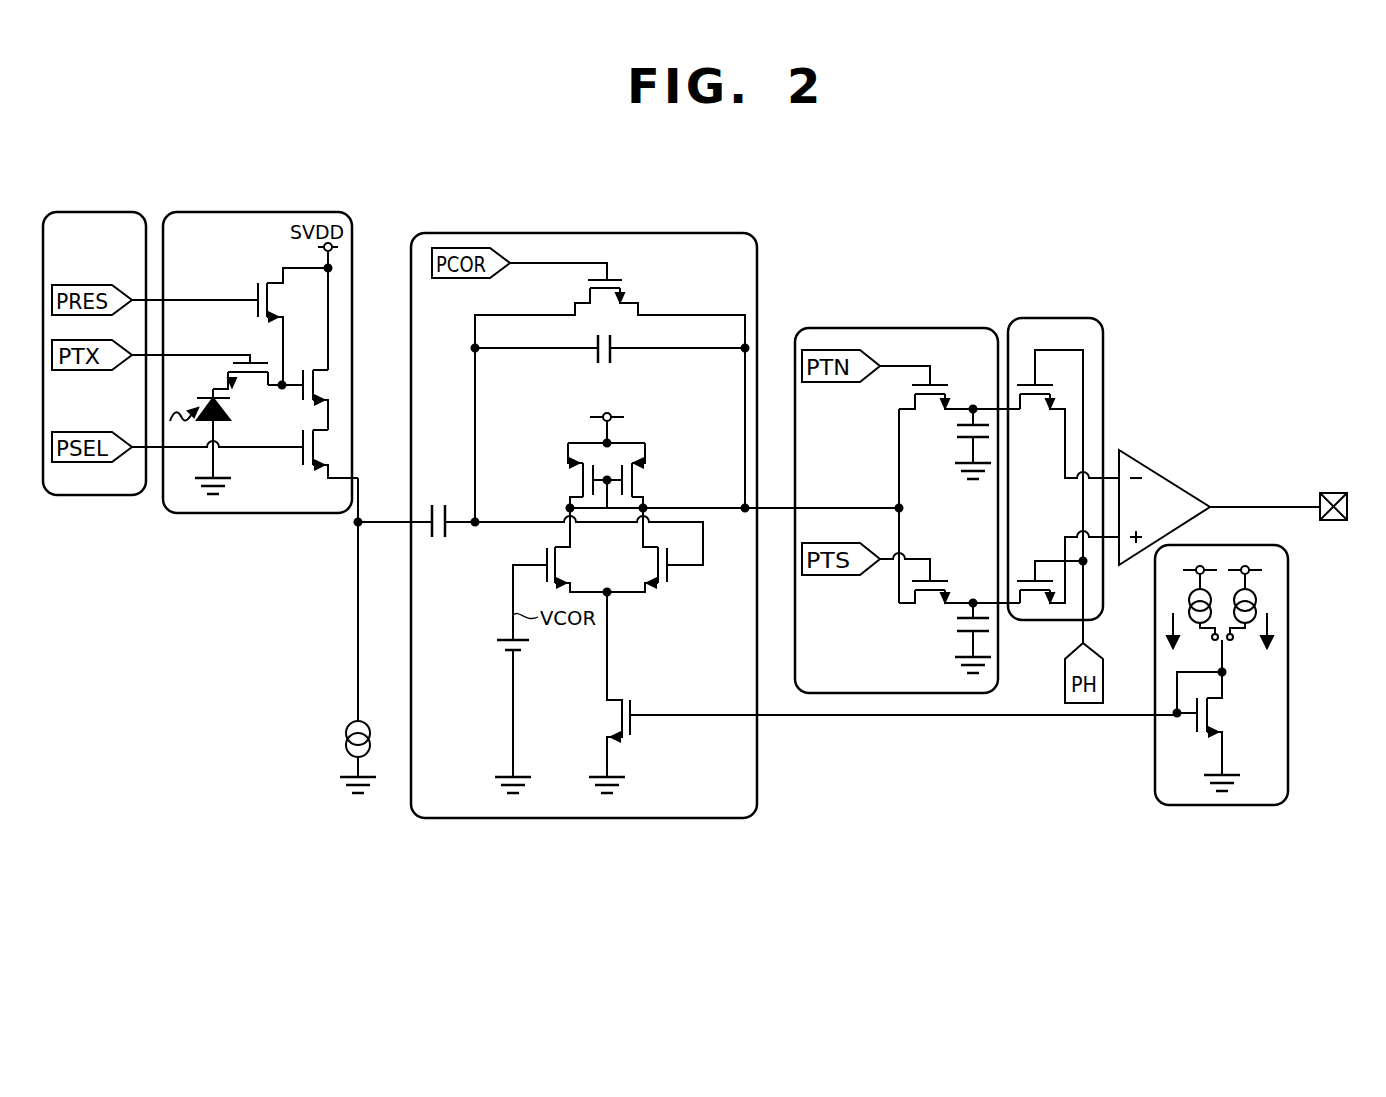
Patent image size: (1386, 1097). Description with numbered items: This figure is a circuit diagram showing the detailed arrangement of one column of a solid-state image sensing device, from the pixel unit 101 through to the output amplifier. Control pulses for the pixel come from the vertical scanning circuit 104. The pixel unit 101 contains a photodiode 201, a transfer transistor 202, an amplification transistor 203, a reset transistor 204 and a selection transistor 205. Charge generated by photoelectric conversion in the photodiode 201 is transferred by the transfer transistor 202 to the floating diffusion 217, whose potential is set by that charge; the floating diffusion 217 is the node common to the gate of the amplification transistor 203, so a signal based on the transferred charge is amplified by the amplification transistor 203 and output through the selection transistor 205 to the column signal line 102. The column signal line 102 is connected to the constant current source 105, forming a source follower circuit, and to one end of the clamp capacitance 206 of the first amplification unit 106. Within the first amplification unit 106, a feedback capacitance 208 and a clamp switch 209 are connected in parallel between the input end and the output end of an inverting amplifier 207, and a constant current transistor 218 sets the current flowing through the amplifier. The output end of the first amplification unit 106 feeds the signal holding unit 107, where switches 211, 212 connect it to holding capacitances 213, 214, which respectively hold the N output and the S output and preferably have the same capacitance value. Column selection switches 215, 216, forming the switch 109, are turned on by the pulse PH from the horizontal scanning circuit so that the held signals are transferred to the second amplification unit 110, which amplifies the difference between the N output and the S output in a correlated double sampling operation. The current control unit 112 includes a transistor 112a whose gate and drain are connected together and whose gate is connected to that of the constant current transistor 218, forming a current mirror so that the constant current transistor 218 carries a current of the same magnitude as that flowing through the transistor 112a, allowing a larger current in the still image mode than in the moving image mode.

The pixel unit 101 is at (254, 212).
The column signal line 102 is at (357, 640).
The vertical scanning circuit 104 is at (95, 497).
The constant current source 105 is at (345, 739).
The first amplification unit 106 is at (612, 233).
The signal holding unit 107 is at (880, 327).
The switch 109 is at (1060, 317).
The second amplification unit 110 is at (1162, 470).
The current control unit 112 is at (1290, 603).
The transistor 112a is at (1222, 712).
The photodiode 201 is at (222, 418).
The transfer transistor 202 is at (258, 358).
The amplification transistor 203 is at (325, 382).
The reset transistor 204 is at (256, 280).
The selection transistor 205 is at (308, 467).
The clamp capacitance 206 is at (440, 540).
The inverting amplifier 207 is at (643, 611).
The feedback capacitance 208 is at (617, 360).
The clamp switch 209 is at (628, 292).
The switch 211 is at (910, 392).
The switch 212 is at (932, 604).
The holding capacitance 213 is at (960, 443).
The holding capacitance 214 is at (953, 625).
The column selection switch 215 is at (1038, 405).
The column selection switch 216 is at (1038, 605).
The floating diffusion 217 is at (282, 388).
The constant current transistor 218 is at (640, 727).